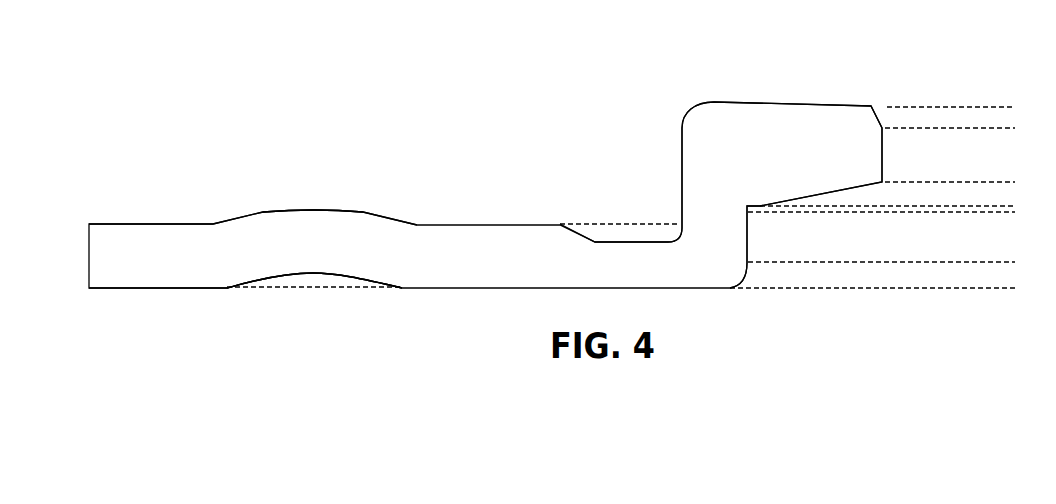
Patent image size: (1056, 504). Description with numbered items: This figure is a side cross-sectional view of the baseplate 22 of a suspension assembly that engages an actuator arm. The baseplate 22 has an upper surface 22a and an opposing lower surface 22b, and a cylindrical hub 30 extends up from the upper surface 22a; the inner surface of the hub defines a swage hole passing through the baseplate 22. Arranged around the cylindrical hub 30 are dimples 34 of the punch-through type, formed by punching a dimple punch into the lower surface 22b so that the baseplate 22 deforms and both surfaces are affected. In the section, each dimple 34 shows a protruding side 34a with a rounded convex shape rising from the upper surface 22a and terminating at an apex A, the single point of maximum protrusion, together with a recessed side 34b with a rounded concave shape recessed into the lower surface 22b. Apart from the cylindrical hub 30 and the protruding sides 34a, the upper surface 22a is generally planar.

The baseplate 22 is at (530, 268).
The upper surface 22a is at (172, 223).
The lower surface 22b is at (168, 288).
The cylindrical hub 30 is at (732, 102).
The dimple 34 is at (366, 212).
The protruding side 34a is at (263, 210).
The recessed side 34b is at (313, 273).
The apex A is at (315, 200).